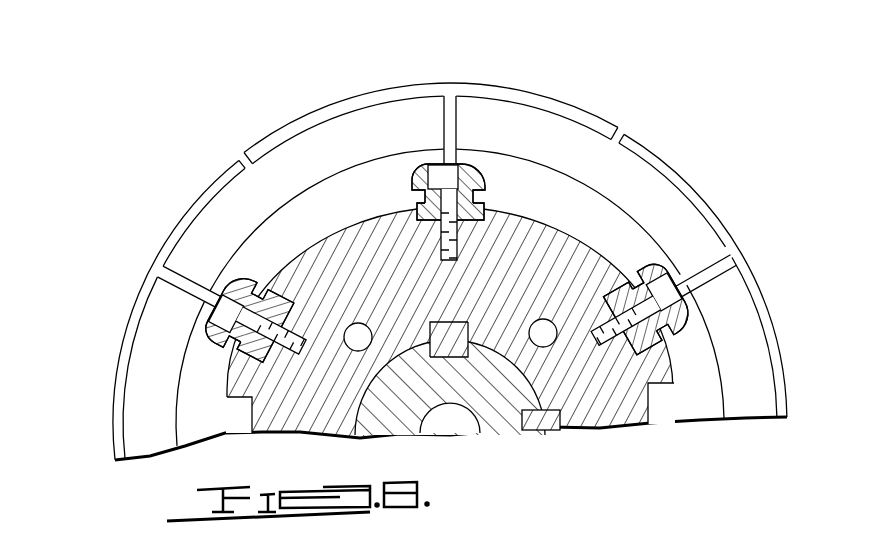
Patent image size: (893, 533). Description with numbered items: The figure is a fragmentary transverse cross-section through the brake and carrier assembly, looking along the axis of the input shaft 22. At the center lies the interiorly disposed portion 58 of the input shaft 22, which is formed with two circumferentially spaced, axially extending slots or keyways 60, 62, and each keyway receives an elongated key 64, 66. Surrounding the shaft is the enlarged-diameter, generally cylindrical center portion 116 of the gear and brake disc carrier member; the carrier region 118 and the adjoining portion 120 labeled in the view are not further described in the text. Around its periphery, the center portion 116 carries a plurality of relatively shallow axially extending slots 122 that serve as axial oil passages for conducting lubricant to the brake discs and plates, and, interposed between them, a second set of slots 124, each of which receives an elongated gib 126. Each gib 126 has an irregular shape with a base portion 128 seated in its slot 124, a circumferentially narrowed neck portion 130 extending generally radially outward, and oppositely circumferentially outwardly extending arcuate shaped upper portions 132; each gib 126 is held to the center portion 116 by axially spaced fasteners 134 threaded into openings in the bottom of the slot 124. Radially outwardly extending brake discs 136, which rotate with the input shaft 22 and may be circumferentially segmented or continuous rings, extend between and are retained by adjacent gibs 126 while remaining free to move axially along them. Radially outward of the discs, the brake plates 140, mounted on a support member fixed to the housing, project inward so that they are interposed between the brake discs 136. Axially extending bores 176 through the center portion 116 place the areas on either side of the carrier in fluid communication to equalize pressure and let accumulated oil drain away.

The input shaft 22 is at (504, 439).
The interiorly disposed portion of input shaft 58 is at (440, 396).
The slot or keyway 60 is at (456, 358).
The slot or keyway 62 is at (492, 413).
The elongated key 64 is at (453, 343).
The elongated key 66 is at (540, 428).
The center portion of gear and brake disc carrier member 116 is at (412, 306).
The body recess 118 is at (362, 401).
The notch 120 is at (462, 322).
The shallow slots 122 is at (360, 250).
The slots 124 is at (262, 322).
The gib 126 is at (492, 168).
The base portion of gib 128 is at (280, 306).
The neck portion of gib 130 is at (237, 343).
The arcuate shaped upper portions of gib 132 is at (280, 264).
The fastener 134 is at (452, 172).
The brake disc 136 is at (327, 137).
The brake plate 140 is at (478, 84).
The bore 176 is at (345, 341).